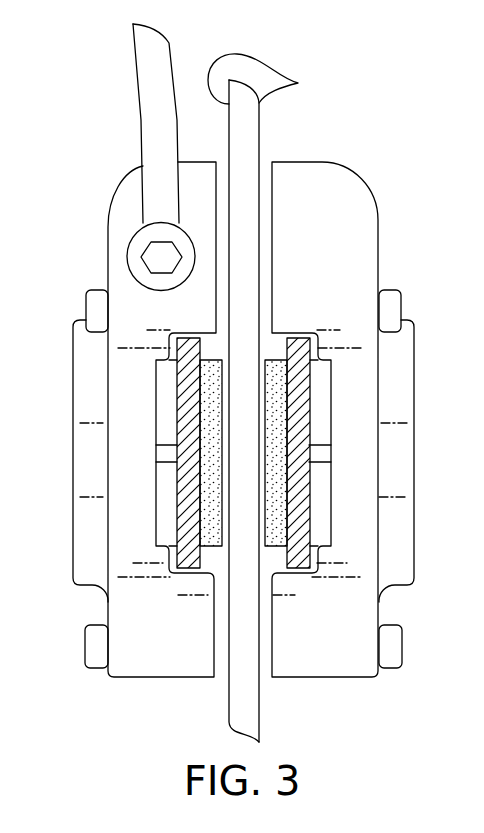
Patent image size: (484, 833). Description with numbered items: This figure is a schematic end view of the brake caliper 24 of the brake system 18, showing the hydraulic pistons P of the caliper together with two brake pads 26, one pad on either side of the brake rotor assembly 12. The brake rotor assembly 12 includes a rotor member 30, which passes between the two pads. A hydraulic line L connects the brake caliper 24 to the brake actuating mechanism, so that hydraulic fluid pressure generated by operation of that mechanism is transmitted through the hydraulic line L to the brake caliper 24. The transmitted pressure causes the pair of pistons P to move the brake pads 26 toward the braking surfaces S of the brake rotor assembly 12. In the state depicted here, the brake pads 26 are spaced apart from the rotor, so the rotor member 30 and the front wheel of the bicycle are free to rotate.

The brake system 18 is at (114, 190).
The brake caliper 24 is at (329, 218).
The brake pads 26 is at (295, 347).
The rotor member 30 is at (240, 632).
The brake rotor assembly 12 is at (242, 698).
The hydraulic line L is at (157, 102).
The braking surfaces S is at (298, 83).
The pistons P is at (167, 502).